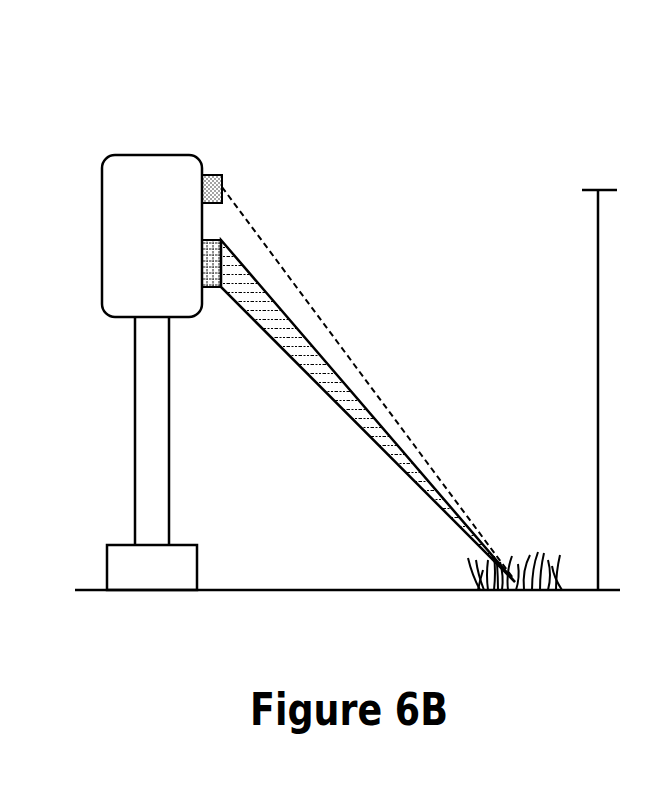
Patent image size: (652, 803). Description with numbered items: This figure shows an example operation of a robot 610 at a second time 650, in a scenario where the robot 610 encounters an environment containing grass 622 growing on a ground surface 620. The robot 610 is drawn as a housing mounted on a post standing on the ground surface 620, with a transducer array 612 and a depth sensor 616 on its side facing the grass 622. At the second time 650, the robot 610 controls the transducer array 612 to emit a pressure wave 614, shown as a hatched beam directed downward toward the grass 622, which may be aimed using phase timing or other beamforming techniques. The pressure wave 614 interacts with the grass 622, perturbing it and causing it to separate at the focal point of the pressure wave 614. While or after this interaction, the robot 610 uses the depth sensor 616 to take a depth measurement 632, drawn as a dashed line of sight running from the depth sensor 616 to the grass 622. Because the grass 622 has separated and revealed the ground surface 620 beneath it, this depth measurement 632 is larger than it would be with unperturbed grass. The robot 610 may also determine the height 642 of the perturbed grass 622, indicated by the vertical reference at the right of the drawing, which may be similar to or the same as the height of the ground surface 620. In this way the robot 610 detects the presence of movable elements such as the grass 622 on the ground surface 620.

The second time 650 is at (147, 74).
The robot 610 is at (128, 155).
The transducer array 612 is at (208, 287).
The pressure wave 614 is at (303, 370).
The depth sensor 616 is at (213, 175).
The ground surface 620 is at (281, 590).
The grass 622 is at (461, 561).
The depth measurement 632 is at (266, 243).
The height 642 is at (594, 258).